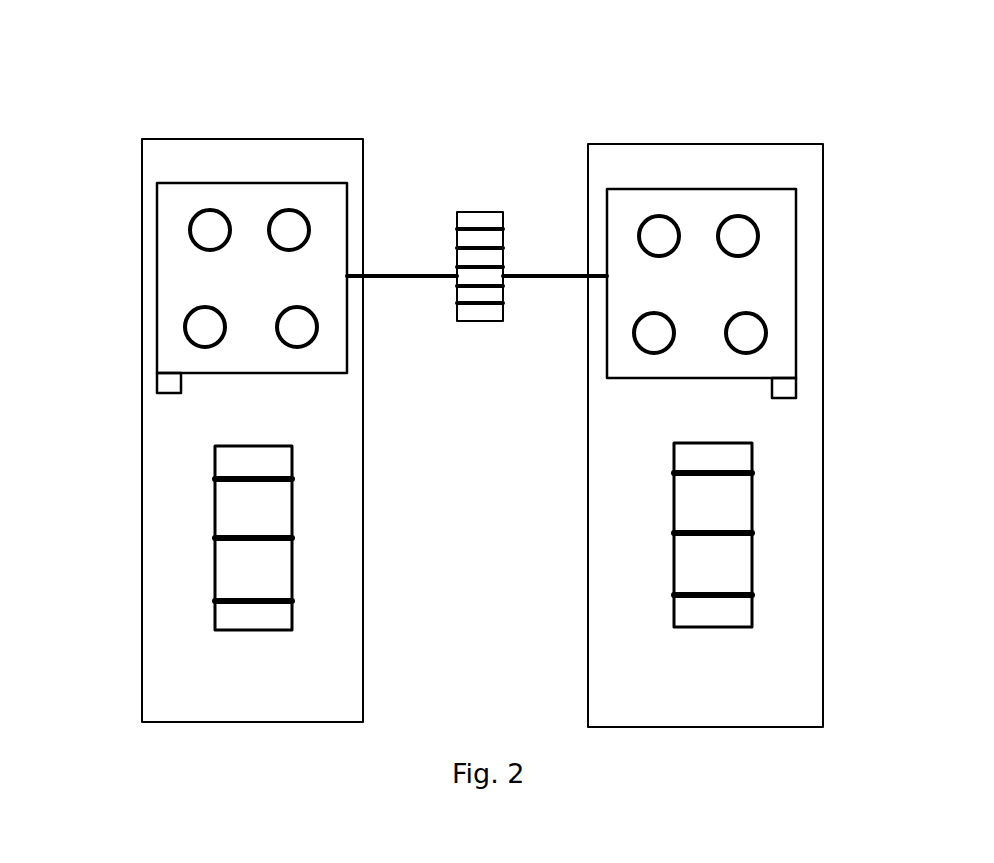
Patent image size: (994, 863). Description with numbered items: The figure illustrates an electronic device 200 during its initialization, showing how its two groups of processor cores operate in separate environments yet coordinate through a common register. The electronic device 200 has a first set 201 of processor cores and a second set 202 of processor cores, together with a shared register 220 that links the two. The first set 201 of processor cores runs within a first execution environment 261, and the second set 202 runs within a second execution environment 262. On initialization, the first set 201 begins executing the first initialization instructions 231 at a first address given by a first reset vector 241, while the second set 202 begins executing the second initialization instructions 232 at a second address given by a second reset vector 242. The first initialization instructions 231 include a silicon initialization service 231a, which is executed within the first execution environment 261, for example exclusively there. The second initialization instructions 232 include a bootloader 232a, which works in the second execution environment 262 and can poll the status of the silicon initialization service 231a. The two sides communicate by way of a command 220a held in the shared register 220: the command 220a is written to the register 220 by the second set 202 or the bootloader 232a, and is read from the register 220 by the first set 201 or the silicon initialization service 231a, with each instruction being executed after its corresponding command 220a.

The electronic device 200 is at (291, 70).
The first set of processor cores 201 is at (167, 272).
The second set of processor cores 202 is at (777, 284).
The shared register 220 is at (456, 192).
The command 220a is at (482, 275).
The first initialization instructions 231 is at (173, 473).
The silicon initialization service 231a is at (210, 510).
The second initialization instructions 232 is at (772, 463).
The bootloader 232a is at (772, 518).
The first reset vector 241 is at (170, 383).
The second reset vector 242 is at (788, 387).
The first execution environment 261 is at (187, 687).
The second execution environment 262 is at (789, 695).